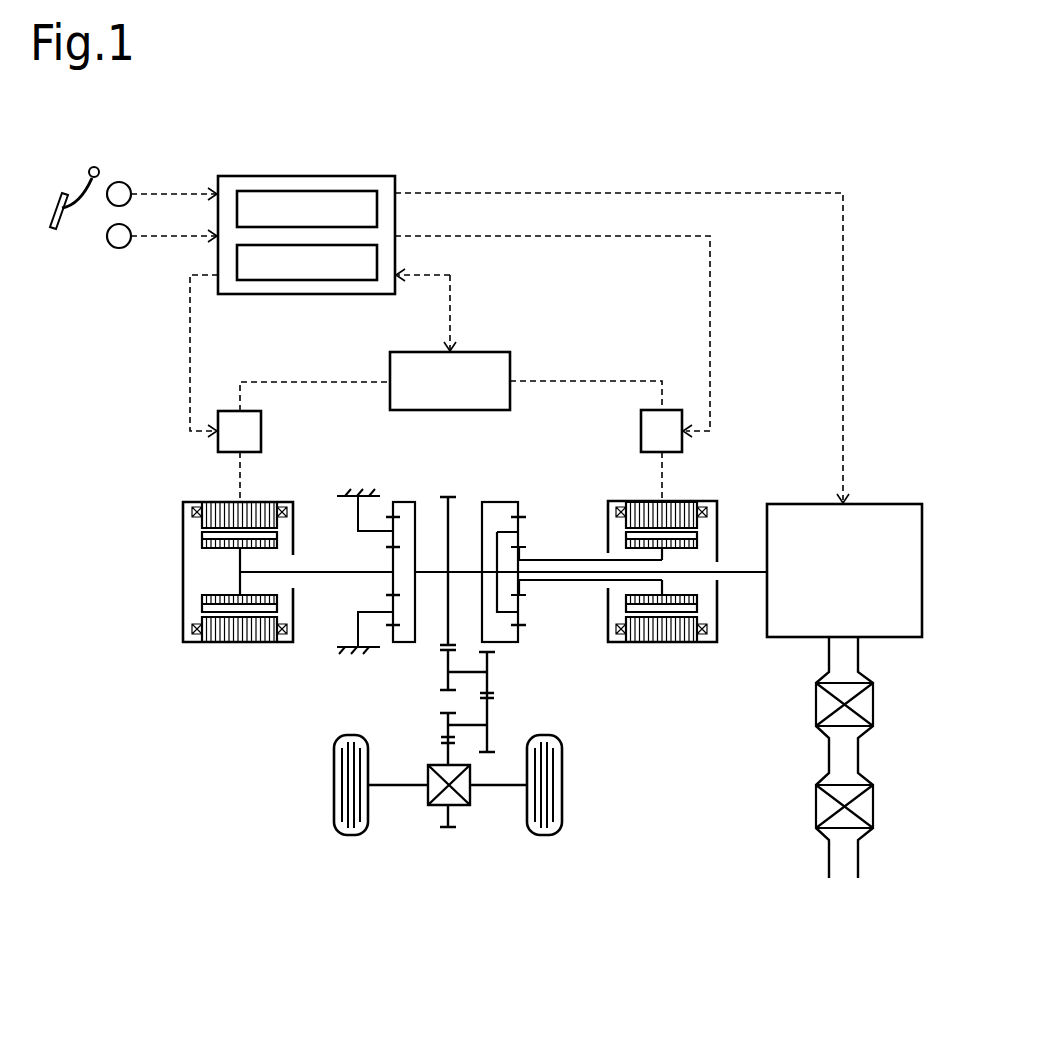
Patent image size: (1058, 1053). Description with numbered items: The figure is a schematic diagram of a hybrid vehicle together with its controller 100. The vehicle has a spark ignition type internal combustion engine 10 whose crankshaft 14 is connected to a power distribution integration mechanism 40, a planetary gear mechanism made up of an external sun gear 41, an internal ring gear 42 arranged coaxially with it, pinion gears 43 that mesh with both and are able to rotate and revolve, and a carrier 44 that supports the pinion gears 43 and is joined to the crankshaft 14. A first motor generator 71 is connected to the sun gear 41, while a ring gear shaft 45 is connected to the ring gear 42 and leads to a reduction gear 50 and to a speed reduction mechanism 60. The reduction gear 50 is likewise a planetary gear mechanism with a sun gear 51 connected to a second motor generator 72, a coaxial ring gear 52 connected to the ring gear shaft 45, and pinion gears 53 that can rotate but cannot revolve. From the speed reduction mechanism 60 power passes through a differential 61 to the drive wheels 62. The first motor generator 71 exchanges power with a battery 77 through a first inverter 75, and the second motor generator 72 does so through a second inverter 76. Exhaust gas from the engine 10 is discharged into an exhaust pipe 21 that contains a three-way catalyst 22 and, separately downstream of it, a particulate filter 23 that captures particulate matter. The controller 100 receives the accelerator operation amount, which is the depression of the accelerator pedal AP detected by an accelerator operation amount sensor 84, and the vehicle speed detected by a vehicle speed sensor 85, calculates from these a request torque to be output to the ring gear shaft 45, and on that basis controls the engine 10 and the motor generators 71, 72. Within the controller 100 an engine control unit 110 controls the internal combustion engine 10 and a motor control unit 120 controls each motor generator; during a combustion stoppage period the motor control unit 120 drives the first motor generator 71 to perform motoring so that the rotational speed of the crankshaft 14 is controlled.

The accelerator pedal AP is at (48, 218).
The accelerator operation amount sensor 84 is at (120, 182).
The vehicle speed sensor 85 is at (119, 248).
The controller 100 is at (395, 176).
The engine control unit 110 is at (330, 191).
The motor control unit 120 is at (330, 282).
The battery 77 is at (483, 352).
The second inverter 76 is at (230, 411).
The first inverter 75 is at (670, 410).
The second motor generator 72 is at (182, 580).
The first motor generator 71 is at (710, 498).
The reduction gear 50 is at (342, 476).
The sun gear 51 is at (392, 560).
The ring gear 52 is at (393, 514).
The pinion gears 53 is at (387, 622).
The ring gear shaft 45 is at (465, 567).
The power distribution integration mechanism 40 is at (529, 486).
The sun gear 41 is at (526, 552).
The ring gear 42 is at (527, 514).
The pinion gears 43 is at (525, 601).
The carrier 44 is at (502, 614).
The crankshaft 14 is at (738, 576).
The internal combustion engine 10 is at (891, 676).
The exhaust pipe 21 is at (828, 753).
The three-way catalyst 22 is at (818, 705).
The particulate filter 23 is at (818, 808).
The speed reduction mechanism 60 is at (517, 709).
The differential 61 is at (442, 806).
The drive wheels 62 is at (593, 805).